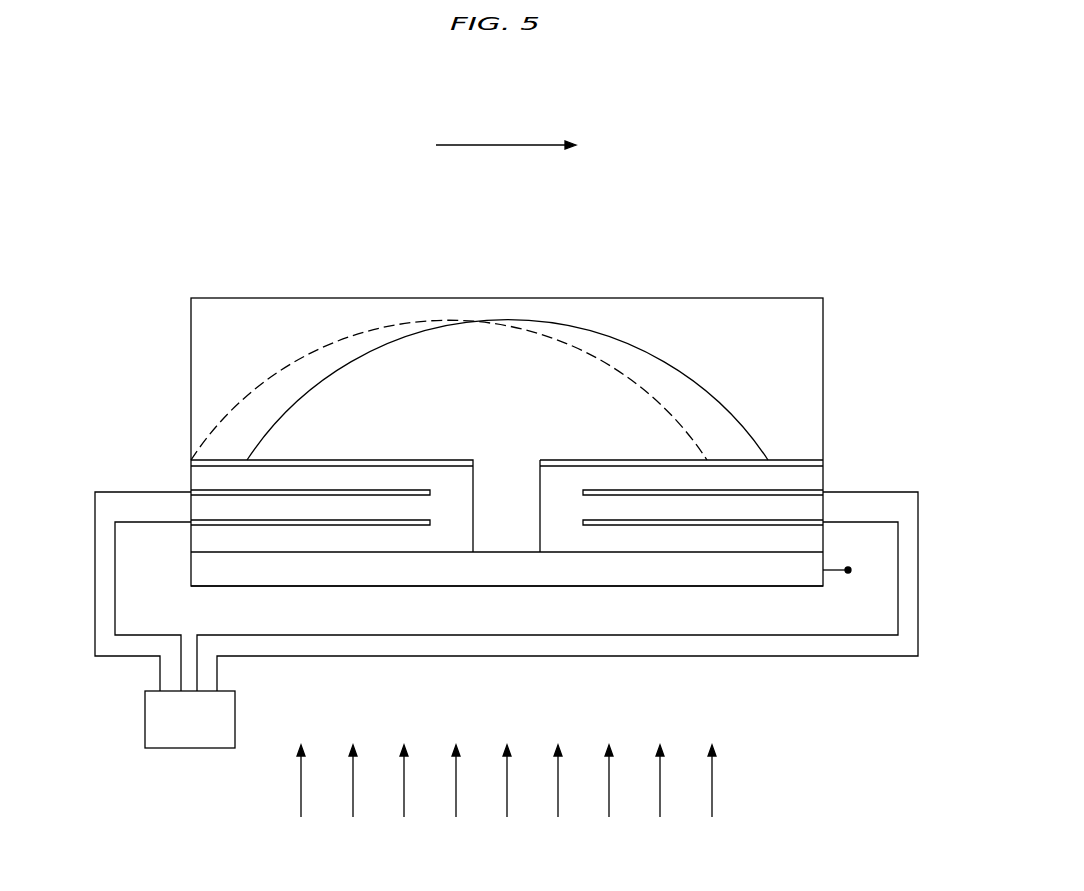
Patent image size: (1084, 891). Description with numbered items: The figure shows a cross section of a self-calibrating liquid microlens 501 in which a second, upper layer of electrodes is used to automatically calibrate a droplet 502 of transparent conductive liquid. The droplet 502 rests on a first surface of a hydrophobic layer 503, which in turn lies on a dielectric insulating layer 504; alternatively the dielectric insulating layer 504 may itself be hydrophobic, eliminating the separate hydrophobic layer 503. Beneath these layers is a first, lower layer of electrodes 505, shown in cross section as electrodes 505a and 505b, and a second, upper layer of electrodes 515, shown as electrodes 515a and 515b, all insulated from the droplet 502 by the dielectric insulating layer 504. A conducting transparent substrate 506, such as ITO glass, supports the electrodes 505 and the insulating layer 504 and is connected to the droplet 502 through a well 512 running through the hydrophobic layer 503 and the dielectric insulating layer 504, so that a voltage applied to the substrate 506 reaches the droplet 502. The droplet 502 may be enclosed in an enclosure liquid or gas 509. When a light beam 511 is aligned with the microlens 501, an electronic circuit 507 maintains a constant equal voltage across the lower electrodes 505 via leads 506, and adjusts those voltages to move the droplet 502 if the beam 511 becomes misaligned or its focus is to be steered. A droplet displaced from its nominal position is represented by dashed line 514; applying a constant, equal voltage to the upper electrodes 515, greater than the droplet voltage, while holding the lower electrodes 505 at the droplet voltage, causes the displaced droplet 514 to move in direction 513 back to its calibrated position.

The self-calibrating liquid microlens 501 is at (621, 239).
The droplet 502 is at (679, 368).
The hydrophobic layer 503 is at (191, 460).
The dielectric insulating layer 504 is at (215, 540).
The first, lower layer of electrodes 505 is at (507, 541).
The electrode 505a is at (616, 521).
The electrode 505b is at (397, 521).
The conducting transparent substrate 506 is at (140, 634).
The electronic circuit 507 is at (207, 730).
The enclosure liquid or gas 509 is at (282, 298).
The light beam 511 is at (298, 802).
The well 512 is at (507, 455).
The direction 513 is at (497, 145).
The dashed line 514 is at (276, 368).
The second, upper layer of electrodes 515 is at (507, 464).
The electrode 515a is at (616, 491).
The electrode 515b is at (397, 491).